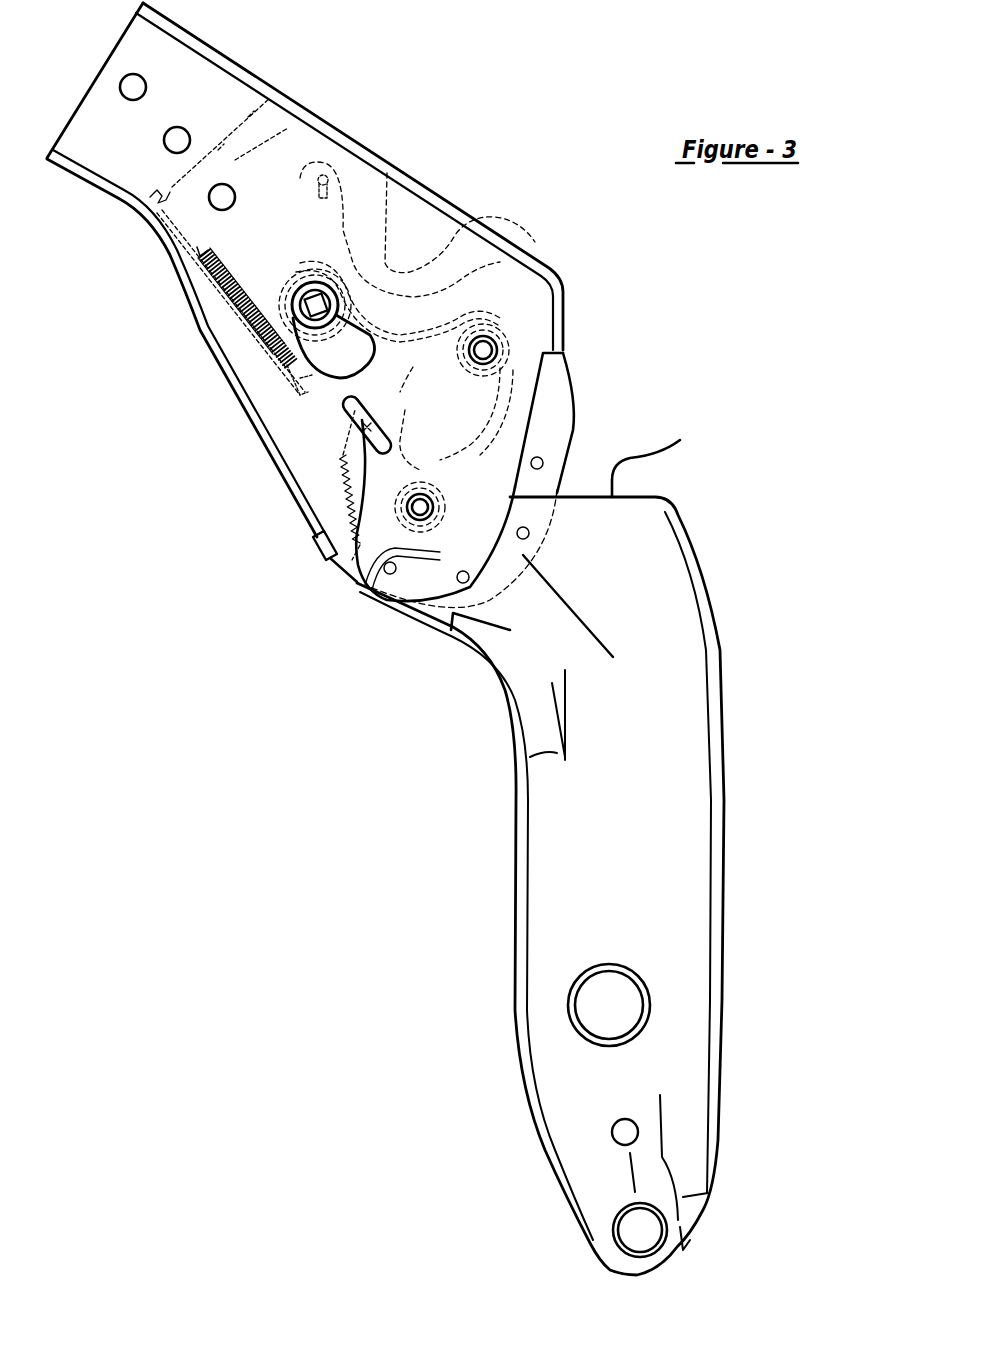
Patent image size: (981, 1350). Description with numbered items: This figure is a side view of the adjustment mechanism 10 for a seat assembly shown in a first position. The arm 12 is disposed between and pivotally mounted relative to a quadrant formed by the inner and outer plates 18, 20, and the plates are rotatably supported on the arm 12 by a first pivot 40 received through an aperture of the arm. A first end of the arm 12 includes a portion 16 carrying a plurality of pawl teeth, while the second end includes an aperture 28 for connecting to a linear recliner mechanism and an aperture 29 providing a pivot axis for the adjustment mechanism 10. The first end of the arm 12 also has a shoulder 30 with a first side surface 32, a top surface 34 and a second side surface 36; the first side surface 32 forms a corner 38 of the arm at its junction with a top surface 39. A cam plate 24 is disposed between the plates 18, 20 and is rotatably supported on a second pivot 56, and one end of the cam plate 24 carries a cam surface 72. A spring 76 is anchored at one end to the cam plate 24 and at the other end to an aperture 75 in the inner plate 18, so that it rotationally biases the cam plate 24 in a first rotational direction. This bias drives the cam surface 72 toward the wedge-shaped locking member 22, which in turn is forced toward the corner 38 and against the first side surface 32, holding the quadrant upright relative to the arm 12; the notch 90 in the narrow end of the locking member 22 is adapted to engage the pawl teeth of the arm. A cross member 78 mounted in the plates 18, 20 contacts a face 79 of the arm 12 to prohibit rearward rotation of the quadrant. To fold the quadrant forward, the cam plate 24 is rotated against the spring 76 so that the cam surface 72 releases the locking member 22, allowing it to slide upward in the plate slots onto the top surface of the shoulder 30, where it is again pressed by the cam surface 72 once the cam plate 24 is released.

The adjustment mechanism 10 is at (788, 353).
The arm 12 is at (724, 692).
The portion 16 is at (297, 530).
The inner plate 18 is at (287, 150).
The outer plate 20 is at (137, 43).
The locking member 22 is at (335, 412).
The cam plate 24 is at (432, 300).
The aperture 28 is at (640, 1228).
The aperture 29 is at (600, 1000).
The shoulder 30 is at (339, 457).
The first side surface 32 is at (450, 452).
The top surface 34 is at (405, 415).
The second side surface 36 is at (339, 521).
The corner 38 is at (447, 453).
The top surface 39 is at (500, 477).
The first pivot 40 is at (420, 512).
The second pivot 56 is at (316, 308).
The cam surface 72 is at (427, 312).
The aperture 75 is at (167, 180).
The spring 76 is at (235, 330).
The cross member 78 is at (485, 347).
The face 79 is at (640, 457).
The notch 90 is at (357, 533).